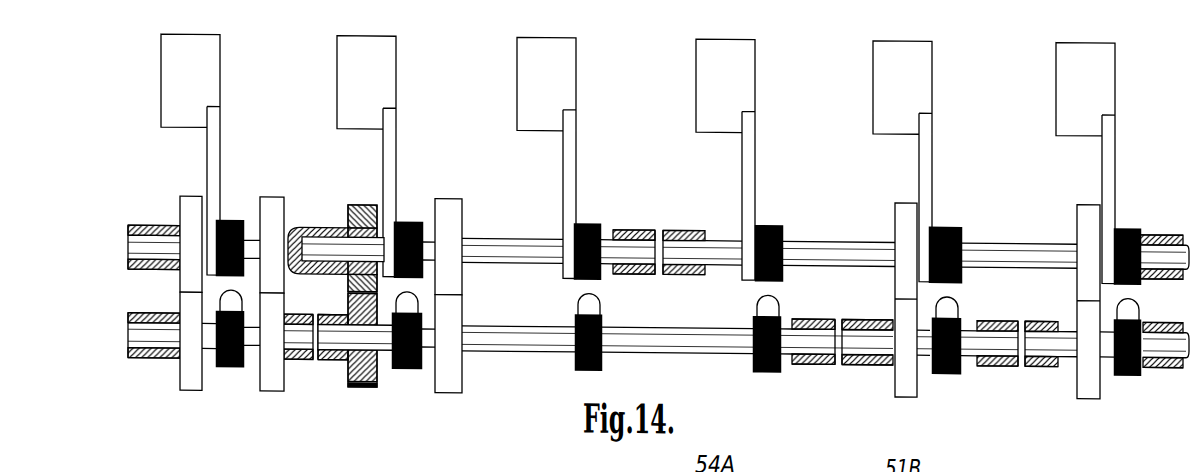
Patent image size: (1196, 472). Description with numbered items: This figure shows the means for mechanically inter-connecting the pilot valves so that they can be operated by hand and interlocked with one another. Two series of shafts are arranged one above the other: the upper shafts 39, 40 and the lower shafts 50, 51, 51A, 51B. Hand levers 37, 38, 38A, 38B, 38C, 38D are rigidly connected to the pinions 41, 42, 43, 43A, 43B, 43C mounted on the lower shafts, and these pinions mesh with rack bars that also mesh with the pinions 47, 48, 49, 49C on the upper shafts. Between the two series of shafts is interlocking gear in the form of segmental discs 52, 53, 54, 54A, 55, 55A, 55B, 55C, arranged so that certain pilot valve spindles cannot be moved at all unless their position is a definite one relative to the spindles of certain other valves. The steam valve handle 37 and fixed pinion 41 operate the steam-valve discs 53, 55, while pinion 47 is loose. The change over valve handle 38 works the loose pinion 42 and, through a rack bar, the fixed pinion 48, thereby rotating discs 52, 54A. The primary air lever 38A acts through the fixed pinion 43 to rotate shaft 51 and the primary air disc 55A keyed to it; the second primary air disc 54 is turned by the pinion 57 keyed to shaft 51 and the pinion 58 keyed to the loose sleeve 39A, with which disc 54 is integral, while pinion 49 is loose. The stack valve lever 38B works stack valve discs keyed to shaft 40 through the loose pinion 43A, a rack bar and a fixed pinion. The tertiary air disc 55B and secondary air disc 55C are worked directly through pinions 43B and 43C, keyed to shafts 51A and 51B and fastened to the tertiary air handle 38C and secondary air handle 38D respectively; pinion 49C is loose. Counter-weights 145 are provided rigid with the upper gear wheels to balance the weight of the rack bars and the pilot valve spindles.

The counter-weights 145 is at (402, 40).
The steam valve handle 37 is at (226, 298).
The change over valve handle 38 is at (408, 304).
The primary air lever 38A is at (590, 299).
The stack valve lever 38B is at (766, 303).
The tertiary air handle 38C is at (948, 300).
The secondary air handle 38D is at (1128, 300).
The shaft 39 is at (140, 248).
The loose sleeve 39A is at (291, 225).
The shaft 40 is at (339, 252).
The fixed pinion 41 is at (228, 362).
The loose pinion 42 is at (402, 362).
The fixed pinion 43 is at (578, 362).
The loose pinion 43A is at (765, 365).
The pinion 43B is at (949, 365).
The pinion 43C is at (1123, 362).
The loose pinion 47 is at (227, 220).
The fixed pinion 48 is at (400, 225).
The loose pinion 49 is at (597, 222).
The loose pinion 49C is at (1128, 219).
The shaft 50 is at (295, 342).
The shaft 51 is at (493, 338).
The shaft 51A is at (995, 335).
The shaft 51B is at (1161, 339).
The segmental disc 52 is at (192, 203).
The steam-valve disc 53 is at (186, 387).
The second primary air disc 54 is at (272, 207).
The segmental disc 54A is at (467, 197).
The steam-valve disc 55 is at (263, 386).
The primary air disc 55A is at (455, 383).
The tertiary air disc 55B is at (905, 380).
The secondary air disc 55C is at (1085, 381).
The pinion 57 is at (362, 380).
The pinion 58 is at (348, 292).